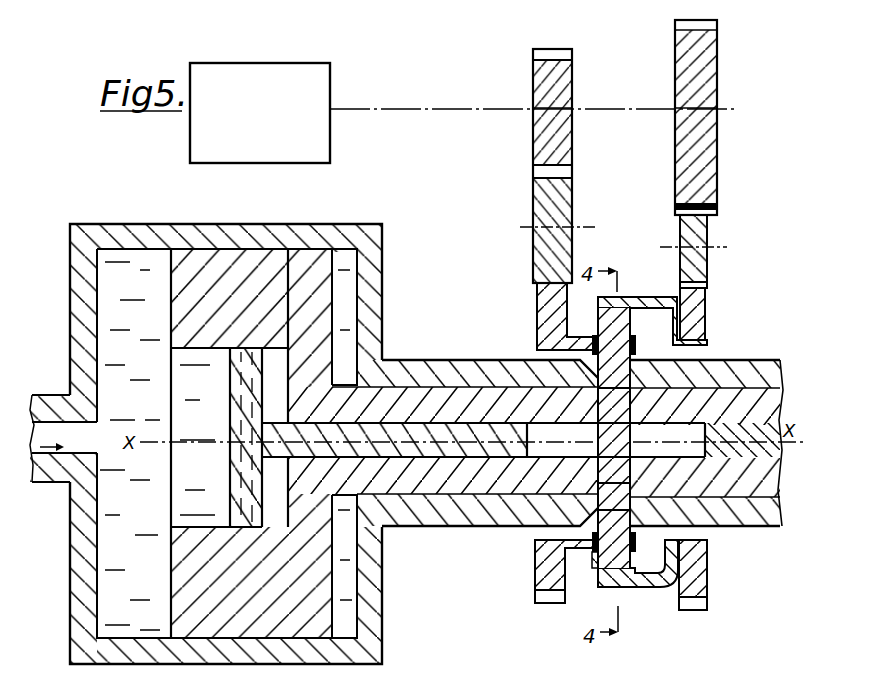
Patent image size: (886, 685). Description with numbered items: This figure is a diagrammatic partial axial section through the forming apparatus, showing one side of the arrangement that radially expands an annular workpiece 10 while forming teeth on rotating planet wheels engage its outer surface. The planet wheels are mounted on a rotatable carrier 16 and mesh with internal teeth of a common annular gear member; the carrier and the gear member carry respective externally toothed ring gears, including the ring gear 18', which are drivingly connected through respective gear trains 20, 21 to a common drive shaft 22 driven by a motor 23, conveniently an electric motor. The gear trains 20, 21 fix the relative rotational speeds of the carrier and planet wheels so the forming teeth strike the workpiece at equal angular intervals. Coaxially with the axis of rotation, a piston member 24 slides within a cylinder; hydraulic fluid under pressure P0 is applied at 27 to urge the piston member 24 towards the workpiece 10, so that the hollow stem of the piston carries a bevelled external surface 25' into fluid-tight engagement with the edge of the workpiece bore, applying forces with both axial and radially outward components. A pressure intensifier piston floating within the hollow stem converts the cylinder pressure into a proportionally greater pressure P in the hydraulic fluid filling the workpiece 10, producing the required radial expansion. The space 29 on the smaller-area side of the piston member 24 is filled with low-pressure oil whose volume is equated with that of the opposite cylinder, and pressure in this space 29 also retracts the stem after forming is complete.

The annular workpiece 10 is at (630, 380).
The rotatable carrier 16 is at (578, 592).
The externally toothed ring gear 18' is at (717, 277).
The gear train 20 is at (526, 200).
The gear train 21 is at (724, 204).
The common drive shaft 22 is at (418, 109).
The motor 23 is at (268, 130).
The piston member 24 is at (302, 610).
The bevelled external surface 25' is at (689, 512).
The hydraulic fluid inlet 27 is at (58, 450).
The space 29 is at (341, 262).